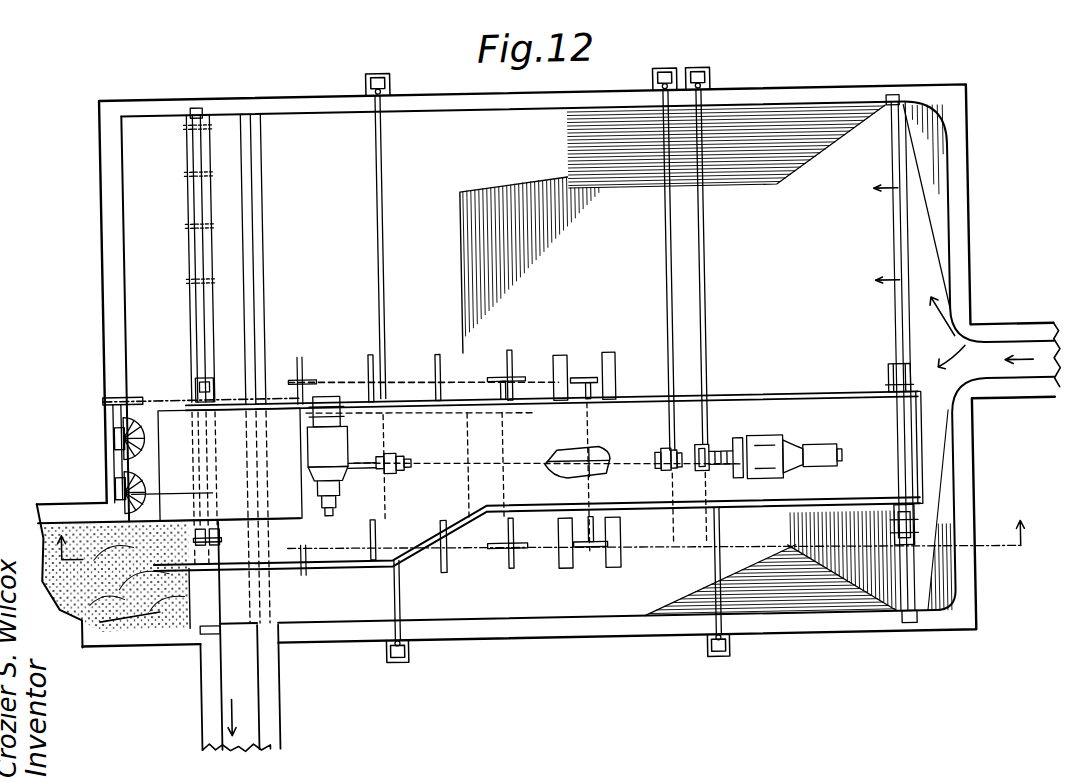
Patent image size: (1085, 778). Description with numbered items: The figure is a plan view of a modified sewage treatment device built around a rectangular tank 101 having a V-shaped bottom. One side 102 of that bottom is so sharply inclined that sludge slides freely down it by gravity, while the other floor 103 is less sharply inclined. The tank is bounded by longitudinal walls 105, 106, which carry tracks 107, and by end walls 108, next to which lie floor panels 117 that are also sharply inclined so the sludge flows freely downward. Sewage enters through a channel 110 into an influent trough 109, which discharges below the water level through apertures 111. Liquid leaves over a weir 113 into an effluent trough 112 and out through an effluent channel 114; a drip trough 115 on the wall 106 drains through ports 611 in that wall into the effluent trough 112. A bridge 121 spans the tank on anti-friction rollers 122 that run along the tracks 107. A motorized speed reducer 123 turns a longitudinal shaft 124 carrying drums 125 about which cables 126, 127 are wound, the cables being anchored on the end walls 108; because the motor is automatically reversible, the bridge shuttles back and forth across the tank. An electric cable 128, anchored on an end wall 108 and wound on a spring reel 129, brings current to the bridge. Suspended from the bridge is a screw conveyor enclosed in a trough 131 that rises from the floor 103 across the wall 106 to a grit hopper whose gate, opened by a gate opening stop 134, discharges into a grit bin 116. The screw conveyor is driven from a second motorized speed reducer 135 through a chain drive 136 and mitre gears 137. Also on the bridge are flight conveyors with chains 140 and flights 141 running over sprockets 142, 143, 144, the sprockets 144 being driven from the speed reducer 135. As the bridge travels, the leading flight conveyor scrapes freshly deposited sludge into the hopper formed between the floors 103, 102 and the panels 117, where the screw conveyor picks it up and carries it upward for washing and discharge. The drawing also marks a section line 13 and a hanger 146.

The rectangular tank 101 is at (749, 99).
The sharply inclined bottom side 102 is at (862, 613).
The floor 103 is at (494, 212).
The longitudinal wall 105 is at (891, 256).
The longitudinal wall 106 is at (185, 199).
The tracks 107 is at (196, 212).
The end walls 108 is at (427, 112).
The influent trough 109 is at (925, 248).
The channel 110 is at (1007, 370).
The apertures 111 is at (888, 223).
The effluent trough 112 is at (226, 143).
The weir 113 is at (262, 288).
The effluent channel 114 is at (216, 703).
The drip trough 115 is at (147, 141).
The grit bin 116 is at (90, 610).
The floor panels 117 is at (776, 135).
The bridge 121 is at (837, 424).
The anti-friction rollers 122 is at (195, 380).
The motorized speed reducer 123 is at (759, 458).
The longitudinal shaft 124 is at (561, 464).
The drums 125 is at (719, 462).
The cable 126 is at (380, 234).
The cable 127 is at (387, 603).
The electric cable 128 is at (663, 232).
The spring reel 129 is at (661, 483).
The trough 131 is at (139, 461).
The gate opening stop 134 is at (130, 606).
The motorized speed reducer 135 is at (340, 483).
The chain drive 136 is at (158, 400).
The mitre gears 137 is at (109, 446).
The chains 140 is at (405, 384).
The flights 141 is at (363, 372).
The sprockets 142 is at (294, 379).
The sprockets 143 is at (583, 381).
The sprockets 144 is at (492, 386).
The hanger 146 is at (450, 425).
The ports 611 is at (188, 173).
The section line 13 is at (541, 564).